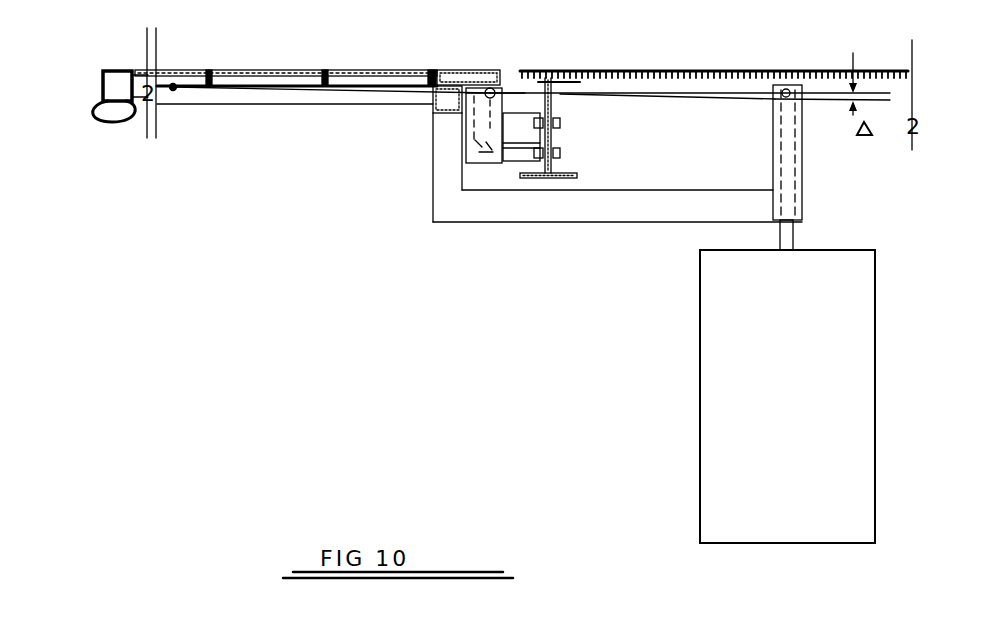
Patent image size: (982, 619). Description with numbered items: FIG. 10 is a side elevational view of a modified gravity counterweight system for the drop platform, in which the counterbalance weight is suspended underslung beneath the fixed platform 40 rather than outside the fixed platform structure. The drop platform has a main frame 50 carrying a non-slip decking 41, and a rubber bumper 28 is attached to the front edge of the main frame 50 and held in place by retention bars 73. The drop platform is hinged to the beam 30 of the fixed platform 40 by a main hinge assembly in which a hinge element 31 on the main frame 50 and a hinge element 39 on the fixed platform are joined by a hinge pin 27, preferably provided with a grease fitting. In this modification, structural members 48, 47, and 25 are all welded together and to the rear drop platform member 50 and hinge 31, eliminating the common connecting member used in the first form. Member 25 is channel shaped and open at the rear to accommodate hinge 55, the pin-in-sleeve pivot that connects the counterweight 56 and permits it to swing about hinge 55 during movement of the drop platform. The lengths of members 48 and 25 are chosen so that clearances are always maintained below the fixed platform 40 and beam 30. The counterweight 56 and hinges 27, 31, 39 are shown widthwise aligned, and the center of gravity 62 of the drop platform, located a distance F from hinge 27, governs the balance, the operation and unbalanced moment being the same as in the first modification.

The structural member 25 is at (804, 207).
The hinge pin 27 is at (483, 80).
The rubber bumper 28 is at (91, 121).
The beam 30 is at (568, 168).
The hinge element 31 is at (496, 92).
The hinge element 39 is at (518, 106).
The fixed platform 40 is at (695, 66).
The decking 41 is at (270, 68).
The structural member 47 is at (522, 226).
The structural member 48 is at (428, 173).
The main frame 50 is at (428, 113).
The pivot pin 55 is at (768, 99).
The counterweight 56 is at (694, 328).
The center of gravity 62 is at (170, 95).
The retention bar 73 is at (98, 89).